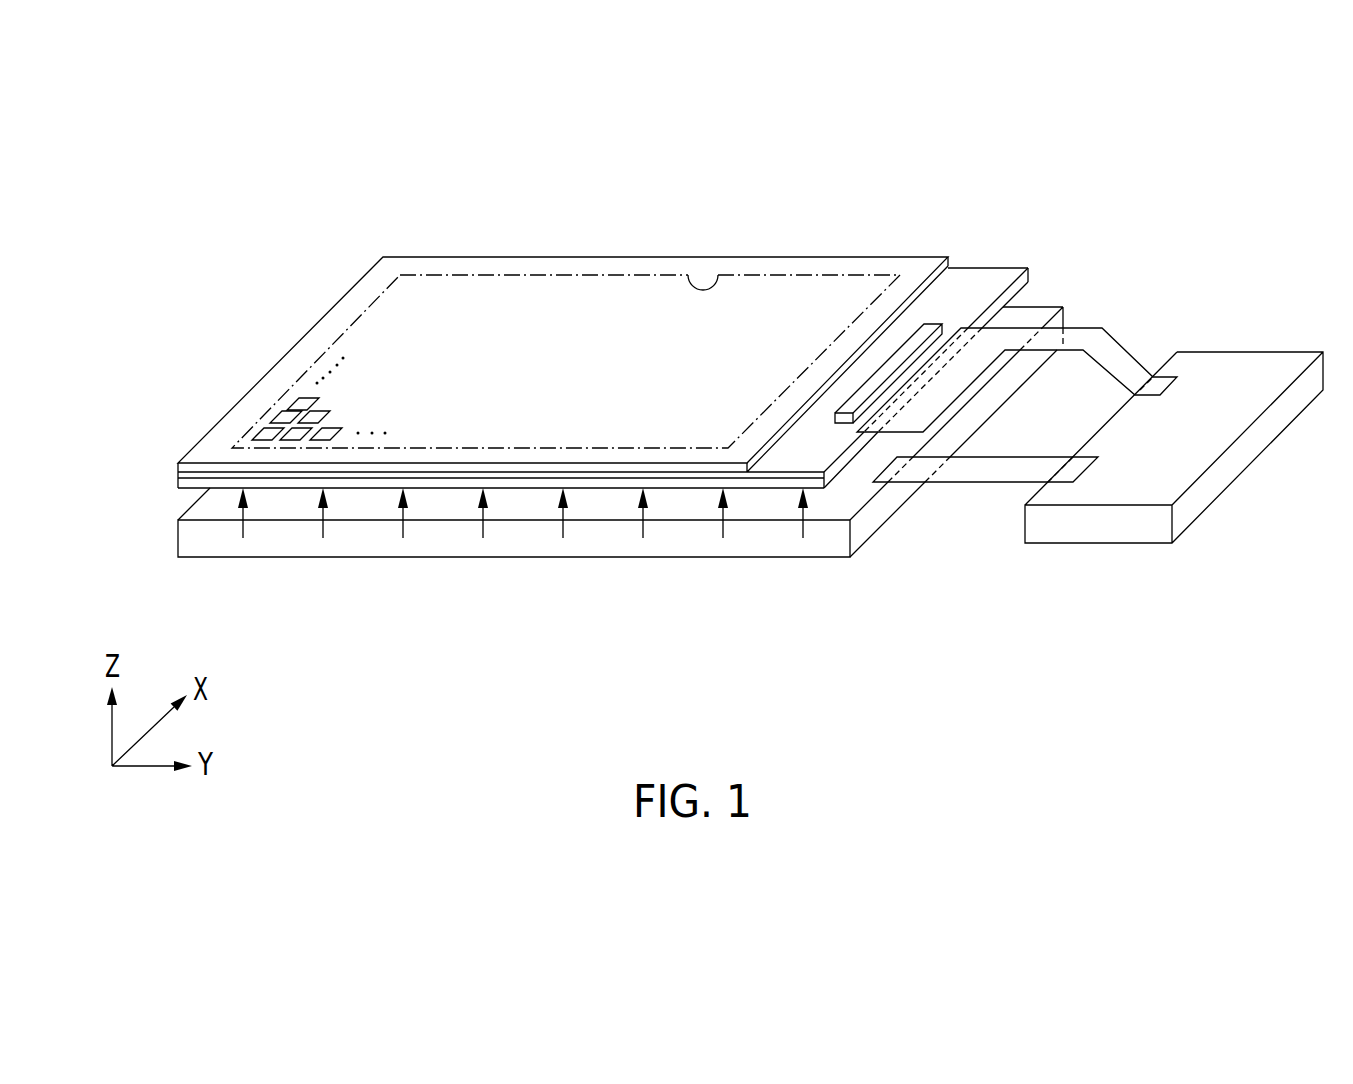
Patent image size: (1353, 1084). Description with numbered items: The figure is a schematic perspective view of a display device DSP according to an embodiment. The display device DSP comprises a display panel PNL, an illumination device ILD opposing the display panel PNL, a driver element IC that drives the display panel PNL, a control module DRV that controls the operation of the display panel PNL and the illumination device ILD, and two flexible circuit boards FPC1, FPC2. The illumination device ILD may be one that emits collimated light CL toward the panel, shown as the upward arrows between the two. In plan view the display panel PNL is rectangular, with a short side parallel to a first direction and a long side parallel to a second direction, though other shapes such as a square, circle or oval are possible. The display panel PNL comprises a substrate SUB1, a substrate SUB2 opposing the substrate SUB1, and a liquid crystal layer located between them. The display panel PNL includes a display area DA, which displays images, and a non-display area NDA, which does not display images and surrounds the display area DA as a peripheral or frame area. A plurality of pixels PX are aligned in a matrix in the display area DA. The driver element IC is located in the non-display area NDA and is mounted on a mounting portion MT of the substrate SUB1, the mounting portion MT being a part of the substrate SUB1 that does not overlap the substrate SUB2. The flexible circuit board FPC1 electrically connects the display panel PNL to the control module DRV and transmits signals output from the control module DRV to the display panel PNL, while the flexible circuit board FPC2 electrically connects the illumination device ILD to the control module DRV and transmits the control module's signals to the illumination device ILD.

The display device DSP is at (317, 260).
The display panel PNL is at (157, 470).
The substrate SUB2 is at (843, 257).
The substrate SUB1 is at (972, 267).
The display area DA is at (716, 274).
The non-display area NDA is at (917, 252).
The pixels PX is at (267, 436).
The mounting portion MT is at (1012, 270).
The driver element IC is at (838, 425).
The flexible circuit board FPC1 is at (1110, 330).
The flexible circuit board FPC2 is at (975, 483).
The control module DRV is at (1274, 348).
The illumination device ILD is at (830, 546).
The collimated light CL is at (812, 560).